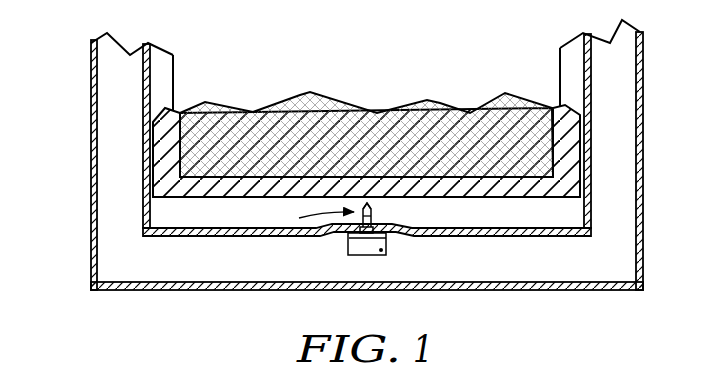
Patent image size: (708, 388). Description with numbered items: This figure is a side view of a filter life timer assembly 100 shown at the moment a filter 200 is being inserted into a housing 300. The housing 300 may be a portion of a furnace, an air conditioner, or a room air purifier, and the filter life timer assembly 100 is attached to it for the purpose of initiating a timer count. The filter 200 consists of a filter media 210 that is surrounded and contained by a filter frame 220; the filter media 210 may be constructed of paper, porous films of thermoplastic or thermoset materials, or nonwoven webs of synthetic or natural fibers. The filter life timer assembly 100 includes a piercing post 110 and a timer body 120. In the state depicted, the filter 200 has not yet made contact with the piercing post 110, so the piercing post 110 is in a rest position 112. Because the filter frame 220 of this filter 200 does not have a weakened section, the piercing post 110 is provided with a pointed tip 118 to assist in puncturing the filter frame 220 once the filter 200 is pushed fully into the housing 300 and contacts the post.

The filter life timer assembly 100 is at (367, 177).
The piercing post 110 is at (371, 214).
The rest position 112 is at (303, 215).
The pointed tip 118 is at (362, 202).
The timer body 120 is at (358, 247).
The filter 200 is at (538, 92).
The filter media 210 is at (402, 108).
The filter frame 220 is at (183, 120).
The housing 300 is at (112, 134).